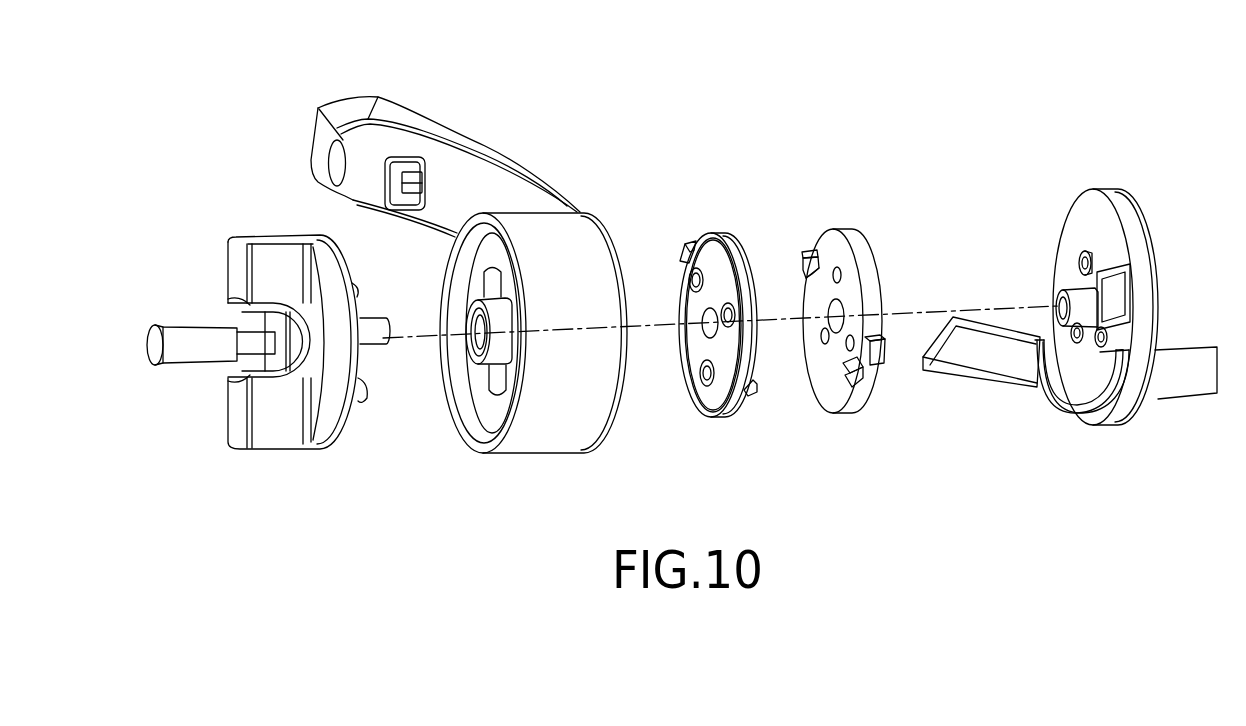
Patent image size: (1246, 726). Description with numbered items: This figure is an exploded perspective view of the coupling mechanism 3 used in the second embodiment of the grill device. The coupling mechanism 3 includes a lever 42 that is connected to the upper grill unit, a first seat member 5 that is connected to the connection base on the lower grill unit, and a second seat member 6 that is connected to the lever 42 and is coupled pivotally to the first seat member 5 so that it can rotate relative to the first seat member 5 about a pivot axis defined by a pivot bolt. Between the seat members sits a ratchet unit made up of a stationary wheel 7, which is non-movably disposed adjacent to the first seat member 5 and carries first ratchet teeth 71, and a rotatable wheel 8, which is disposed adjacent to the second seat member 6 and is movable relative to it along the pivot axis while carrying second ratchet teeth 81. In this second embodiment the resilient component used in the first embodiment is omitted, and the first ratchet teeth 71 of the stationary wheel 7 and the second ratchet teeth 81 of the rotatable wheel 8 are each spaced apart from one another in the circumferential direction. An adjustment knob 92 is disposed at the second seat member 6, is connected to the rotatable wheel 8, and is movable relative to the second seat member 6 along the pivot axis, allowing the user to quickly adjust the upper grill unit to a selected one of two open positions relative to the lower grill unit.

The coupling mechanism 3 is at (455, 130).
The lever 42 is at (438, 138).
The first seat member 5 is at (1123, 188).
The second seat member 6 is at (550, 407).
The stationary wheel 7 is at (839, 303).
The first ratchet teeth 71 is at (809, 252).
The rotatable wheel 8 is at (711, 369).
The second ratchet teeth 81 is at (752, 395).
The adjustment knob 92 is at (279, 450).